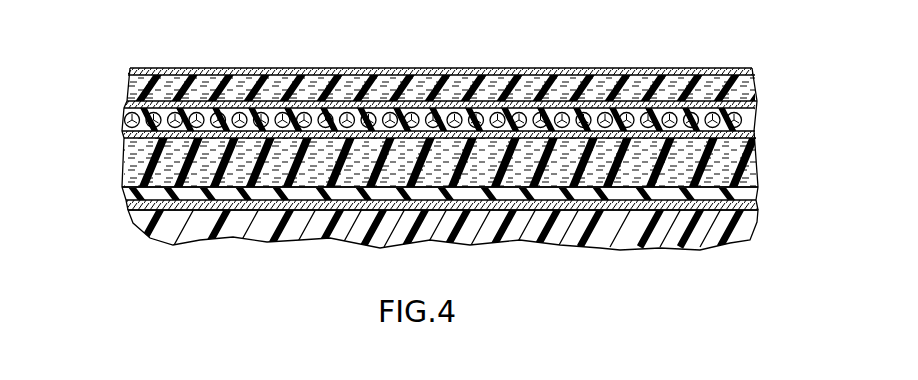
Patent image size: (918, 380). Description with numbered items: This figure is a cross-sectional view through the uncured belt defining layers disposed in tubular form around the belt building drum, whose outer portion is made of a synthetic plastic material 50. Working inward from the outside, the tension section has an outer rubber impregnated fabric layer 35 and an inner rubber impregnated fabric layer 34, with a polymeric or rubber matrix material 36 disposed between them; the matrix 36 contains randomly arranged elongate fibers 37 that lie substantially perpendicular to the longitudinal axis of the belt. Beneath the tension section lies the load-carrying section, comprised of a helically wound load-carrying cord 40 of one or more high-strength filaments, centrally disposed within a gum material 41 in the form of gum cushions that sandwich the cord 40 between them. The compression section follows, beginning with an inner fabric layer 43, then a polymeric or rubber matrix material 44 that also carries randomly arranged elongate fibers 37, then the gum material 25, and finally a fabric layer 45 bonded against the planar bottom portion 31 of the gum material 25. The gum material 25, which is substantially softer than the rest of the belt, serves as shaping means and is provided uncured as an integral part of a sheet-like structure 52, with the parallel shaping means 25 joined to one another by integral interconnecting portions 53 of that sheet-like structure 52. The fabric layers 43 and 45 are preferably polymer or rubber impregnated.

The gum material 25 is at (262, 200).
The planar bottom portion 31 is at (197, 207).
The inner rubber impregnated fabric layer 34 is at (127, 104).
The outer rubber impregnated fabric layer 35 is at (170, 67).
The rubber matrix material 36 is at (127, 77).
The elongate fibers 37 is at (270, 80).
The load-carrying cord 40 is at (443, 113).
The gum material 41 is at (375, 110).
The inner fabric layer 43 is at (127, 131).
The rubber matrix material 44 is at (127, 163).
The fabric layer 45 is at (140, 211).
The synthetic plastic material 50 is at (227, 232).
The sheet-like structure 52 is at (746, 193).
The integral interconnecting portions 53 is at (357, 195).